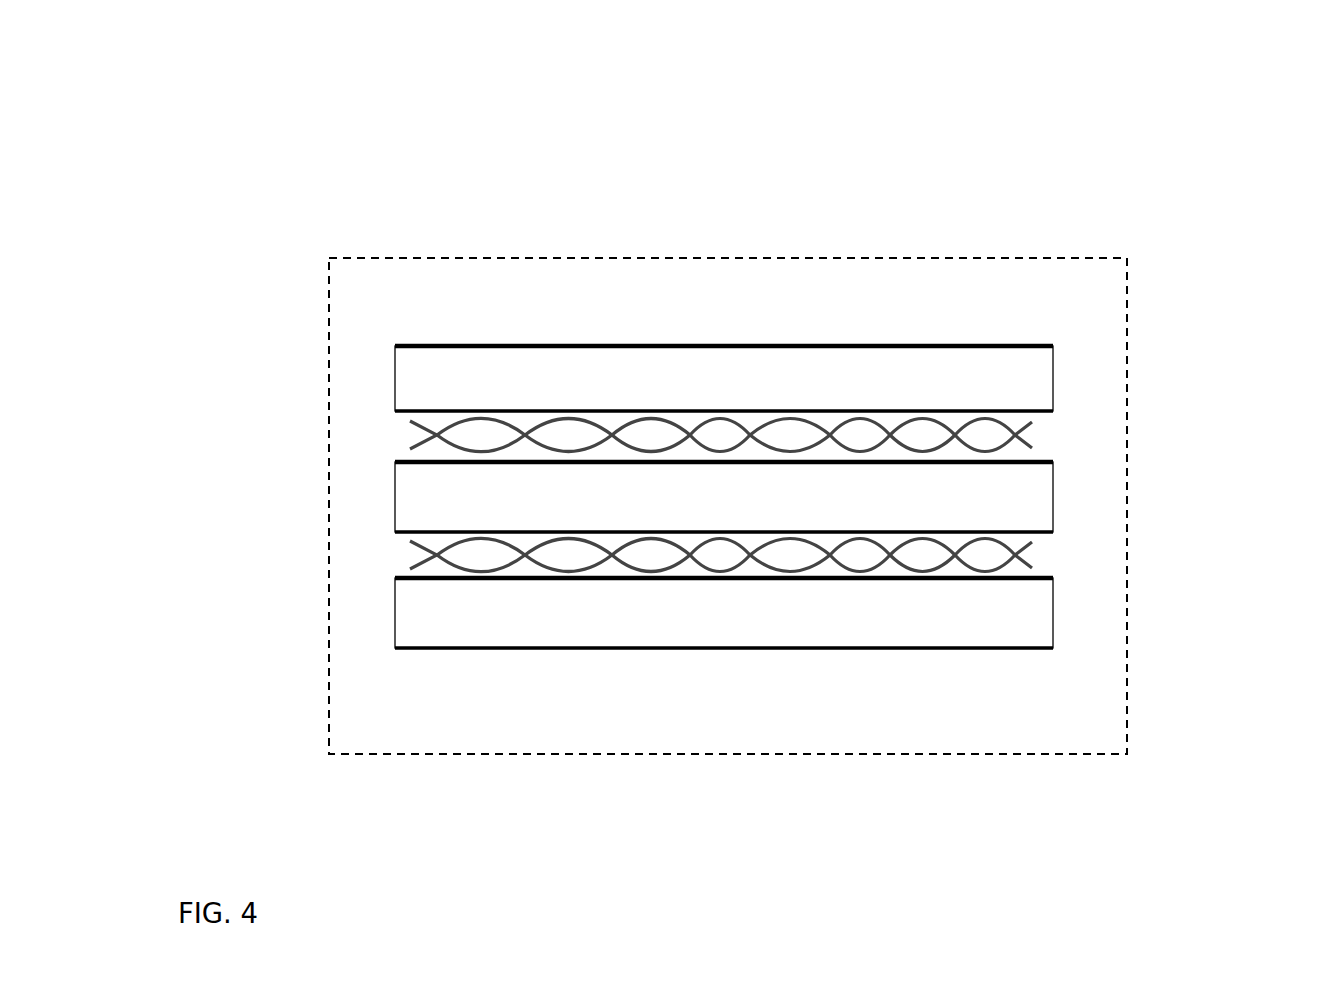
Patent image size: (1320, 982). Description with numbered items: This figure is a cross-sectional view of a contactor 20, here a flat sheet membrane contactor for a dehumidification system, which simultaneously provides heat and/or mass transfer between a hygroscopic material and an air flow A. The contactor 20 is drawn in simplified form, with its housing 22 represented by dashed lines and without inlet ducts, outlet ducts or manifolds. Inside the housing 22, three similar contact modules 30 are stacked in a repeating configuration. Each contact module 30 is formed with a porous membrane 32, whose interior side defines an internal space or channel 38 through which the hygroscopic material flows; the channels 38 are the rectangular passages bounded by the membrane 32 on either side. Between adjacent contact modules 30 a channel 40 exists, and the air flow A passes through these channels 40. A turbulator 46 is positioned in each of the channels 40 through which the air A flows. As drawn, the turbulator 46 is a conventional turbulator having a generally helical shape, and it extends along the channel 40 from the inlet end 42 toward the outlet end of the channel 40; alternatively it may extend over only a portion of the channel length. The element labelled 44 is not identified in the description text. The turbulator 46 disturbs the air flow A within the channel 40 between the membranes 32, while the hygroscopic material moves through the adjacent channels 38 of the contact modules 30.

The contactor 20 is at (303, 166).
The housing 22 is at (1065, 258).
The contact module 30 is at (519, 338).
The porous membrane 32 is at (700, 345).
The channel 38 is at (724, 422).
The channel 40 is at (395, 428).
The inlet end 42 is at (392, 452).
The plate edge 44 is at (1058, 420).
The turbulator 46 is at (1010, 433).
The air flow A is at (388, 441).